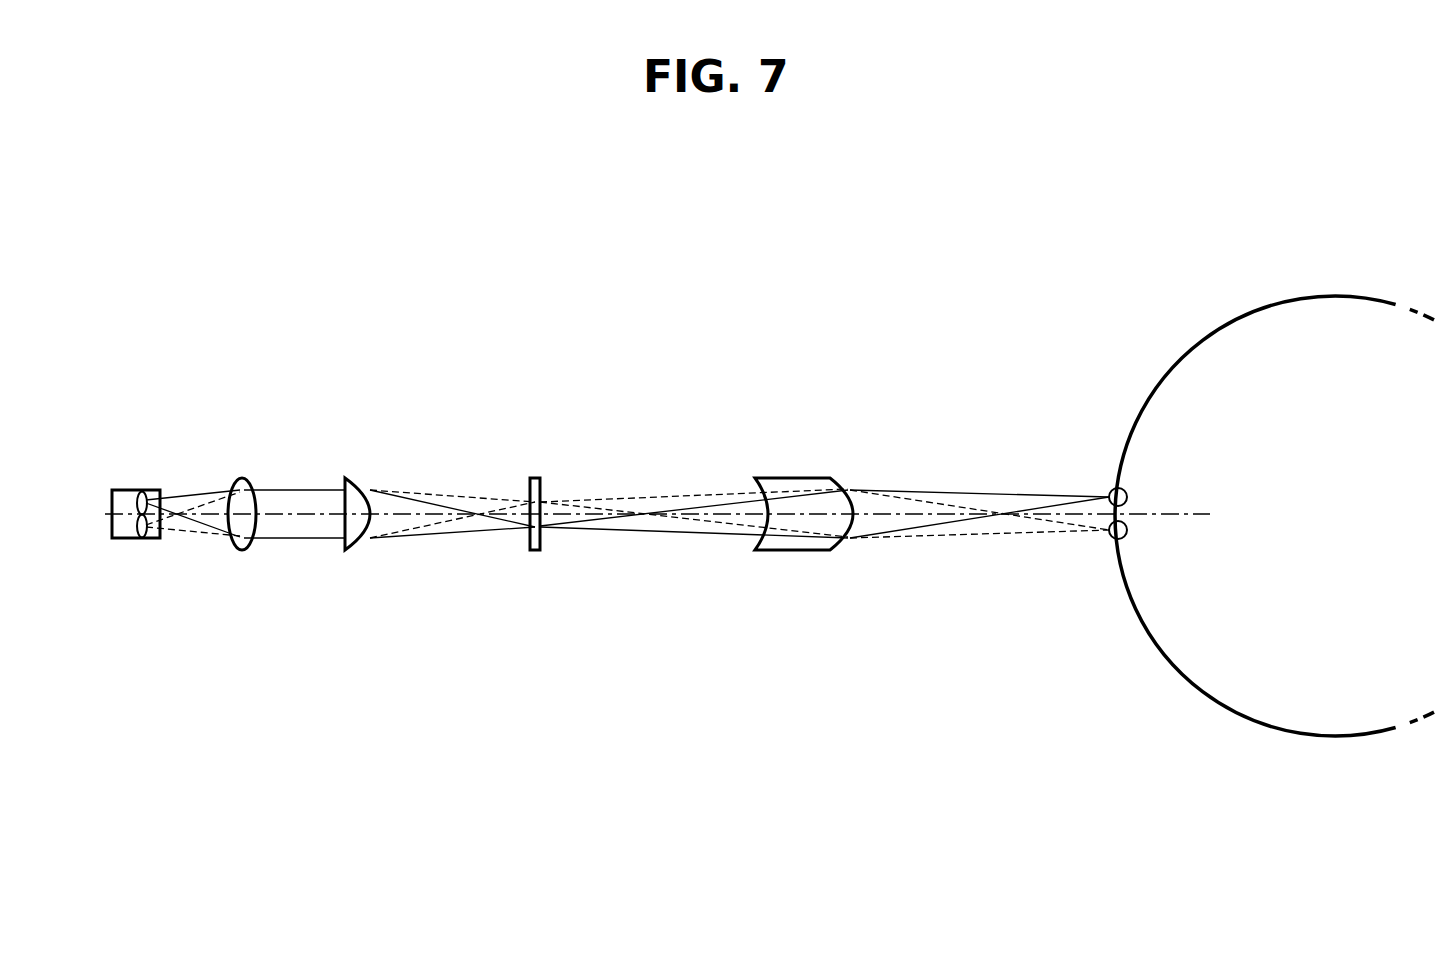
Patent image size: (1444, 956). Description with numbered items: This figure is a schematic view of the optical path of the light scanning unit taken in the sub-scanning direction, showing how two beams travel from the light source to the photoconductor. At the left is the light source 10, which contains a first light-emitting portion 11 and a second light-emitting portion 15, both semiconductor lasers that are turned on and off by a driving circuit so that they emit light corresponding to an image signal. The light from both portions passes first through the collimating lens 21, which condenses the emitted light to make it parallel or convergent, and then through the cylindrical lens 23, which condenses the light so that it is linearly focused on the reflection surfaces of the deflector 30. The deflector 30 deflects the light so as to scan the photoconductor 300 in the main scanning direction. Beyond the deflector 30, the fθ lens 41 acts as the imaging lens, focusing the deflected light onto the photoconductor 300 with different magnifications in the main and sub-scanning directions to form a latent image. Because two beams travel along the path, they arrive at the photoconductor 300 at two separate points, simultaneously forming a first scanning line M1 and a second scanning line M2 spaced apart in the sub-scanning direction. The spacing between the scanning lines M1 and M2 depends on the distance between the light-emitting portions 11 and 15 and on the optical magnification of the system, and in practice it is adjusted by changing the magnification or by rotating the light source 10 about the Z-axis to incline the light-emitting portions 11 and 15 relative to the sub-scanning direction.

The light source 10 is at (114, 486).
The first light-emitting portion 11 is at (144, 490).
The second light-emitting portion 15 is at (144, 539).
The collimating lens 21 is at (244, 480).
The cylindrical lens 23 is at (352, 478).
The deflector 30 is at (548, 476).
The fθ lens 41 is at (835, 478).
The first scanning line M1 is at (988, 492).
The second scanning line M2 is at (990, 537).
The photoconductor 300 is at (1201, 331).